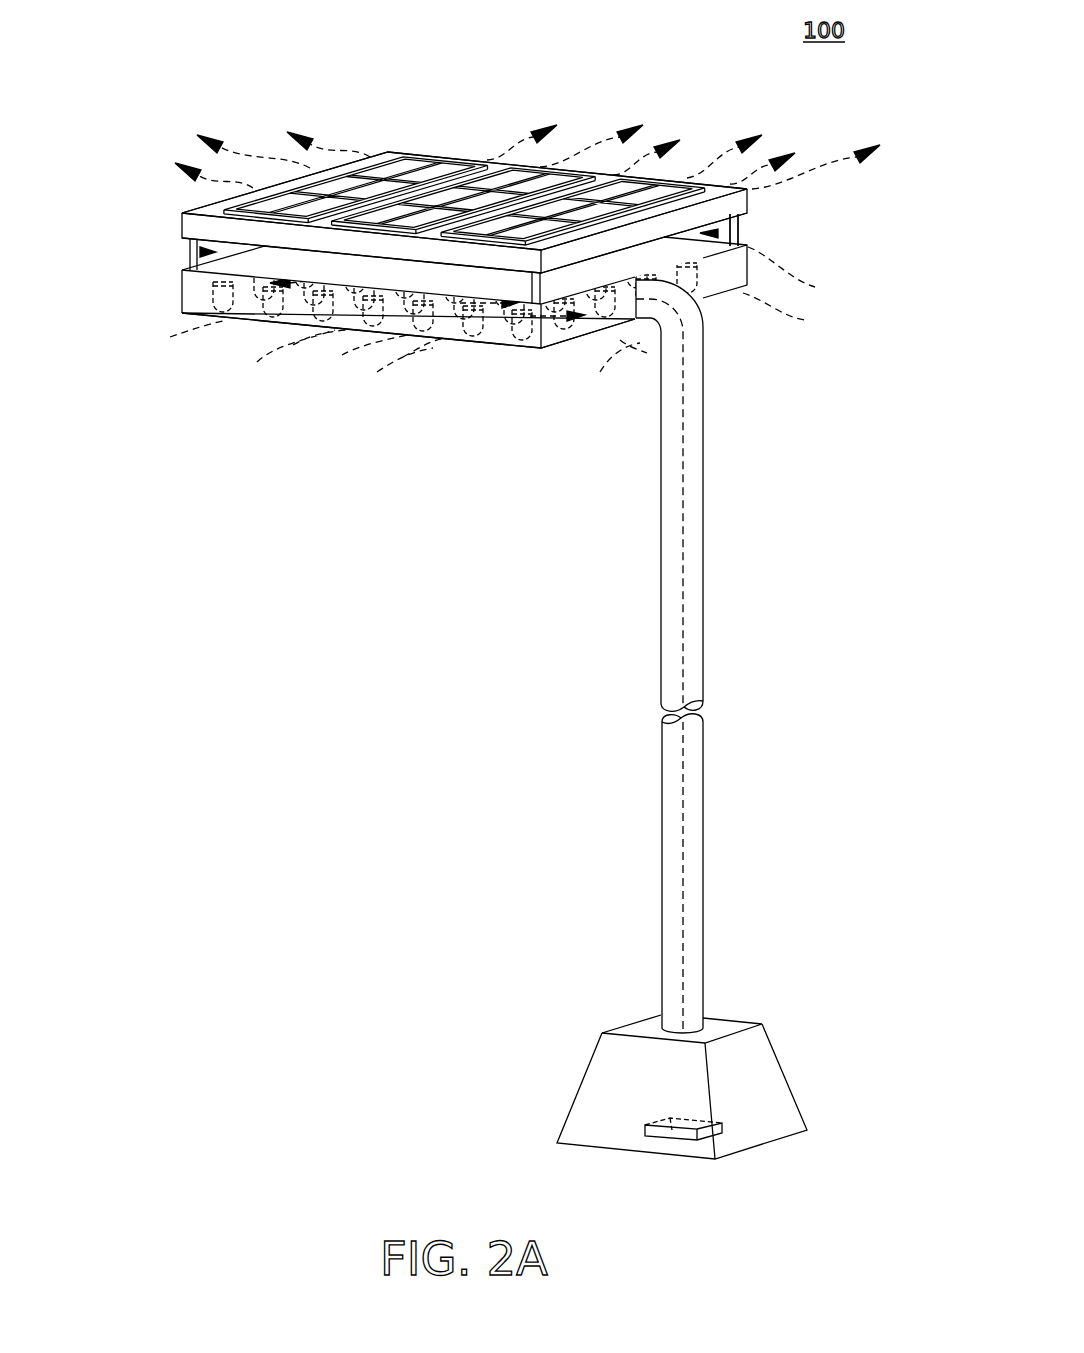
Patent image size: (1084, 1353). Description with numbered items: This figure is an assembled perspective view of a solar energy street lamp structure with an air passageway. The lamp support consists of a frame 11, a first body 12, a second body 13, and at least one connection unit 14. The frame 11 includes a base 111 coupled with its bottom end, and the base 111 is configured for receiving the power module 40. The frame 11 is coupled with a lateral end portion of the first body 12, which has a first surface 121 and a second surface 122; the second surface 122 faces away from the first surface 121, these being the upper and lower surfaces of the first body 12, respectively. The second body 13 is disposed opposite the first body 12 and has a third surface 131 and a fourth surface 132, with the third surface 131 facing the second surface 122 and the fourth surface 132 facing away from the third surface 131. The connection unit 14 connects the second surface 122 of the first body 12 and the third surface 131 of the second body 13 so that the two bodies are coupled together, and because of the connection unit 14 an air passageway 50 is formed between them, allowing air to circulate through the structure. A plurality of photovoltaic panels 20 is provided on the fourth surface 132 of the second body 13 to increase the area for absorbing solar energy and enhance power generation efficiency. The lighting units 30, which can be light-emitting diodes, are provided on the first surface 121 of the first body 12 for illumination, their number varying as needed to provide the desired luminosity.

The frame 11 is at (697, 467).
The base 111 is at (760, 1065).
The first body 12 is at (722, 306).
The first surface 121 is at (233, 307).
The second surface 122 is at (185, 308).
The second body 13 is at (748, 196).
The third surface 131 is at (185, 240).
The fourth surface 132 is at (202, 210).
The connection unit 14 is at (747, 230).
The photovoltaic panel 20 is at (420, 167).
The lighting unit 30 is at (527, 345).
The power module 40 is at (668, 1118).
The air passageway 50 is at (188, 252).